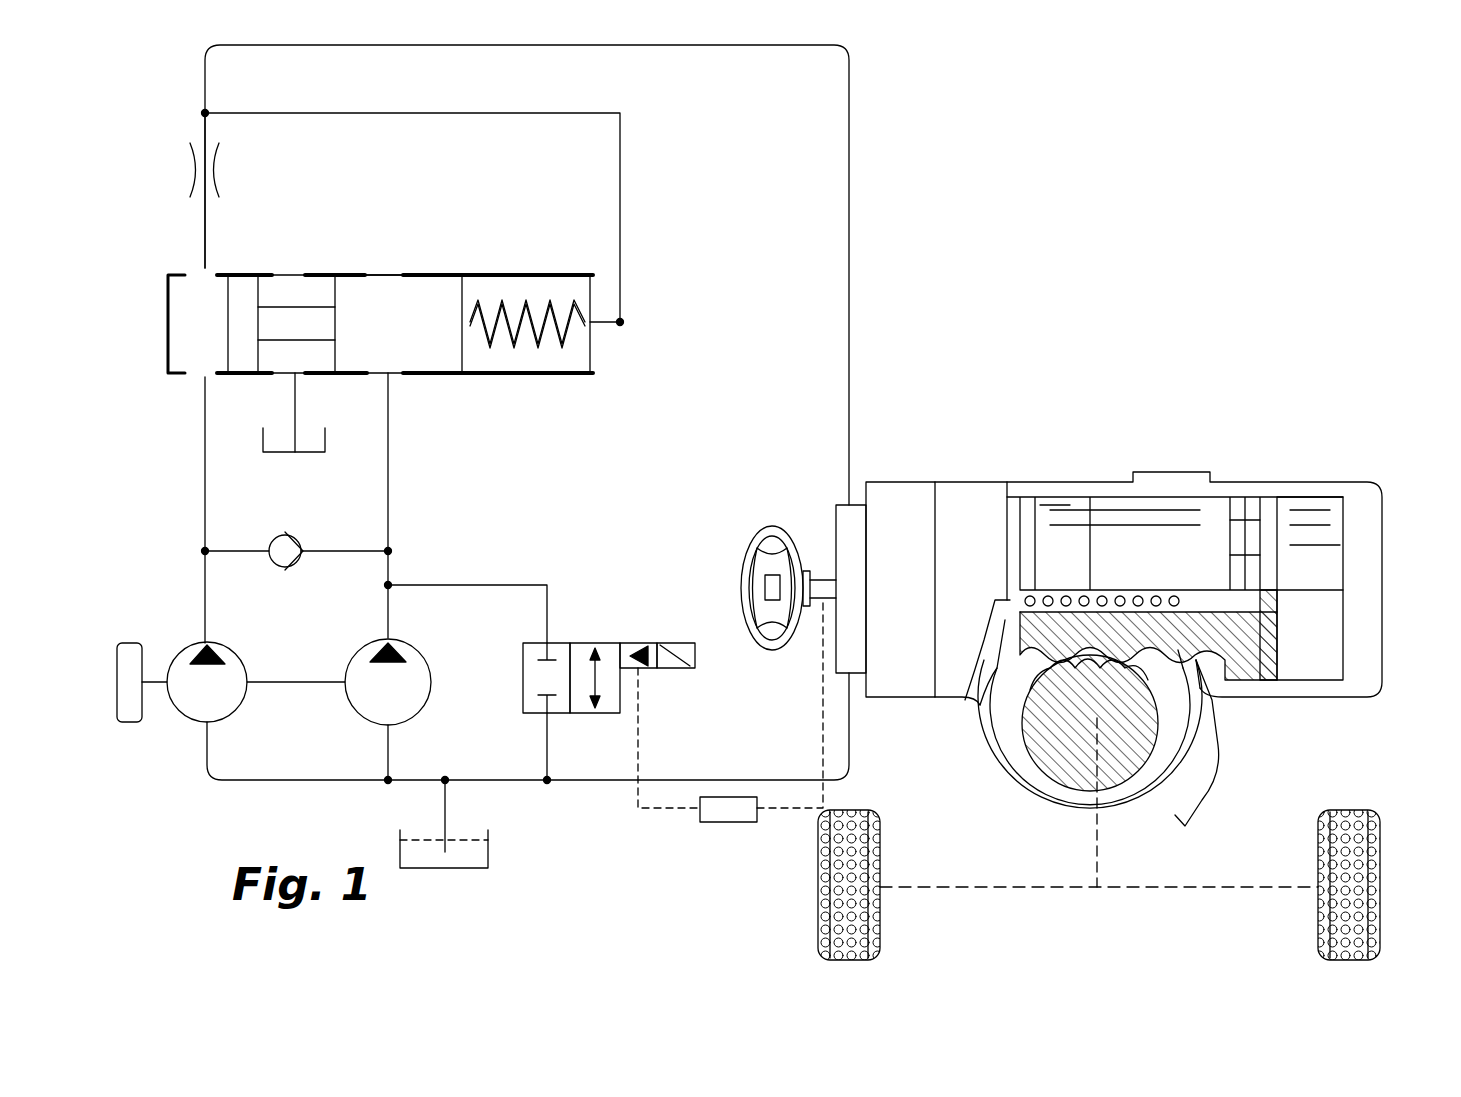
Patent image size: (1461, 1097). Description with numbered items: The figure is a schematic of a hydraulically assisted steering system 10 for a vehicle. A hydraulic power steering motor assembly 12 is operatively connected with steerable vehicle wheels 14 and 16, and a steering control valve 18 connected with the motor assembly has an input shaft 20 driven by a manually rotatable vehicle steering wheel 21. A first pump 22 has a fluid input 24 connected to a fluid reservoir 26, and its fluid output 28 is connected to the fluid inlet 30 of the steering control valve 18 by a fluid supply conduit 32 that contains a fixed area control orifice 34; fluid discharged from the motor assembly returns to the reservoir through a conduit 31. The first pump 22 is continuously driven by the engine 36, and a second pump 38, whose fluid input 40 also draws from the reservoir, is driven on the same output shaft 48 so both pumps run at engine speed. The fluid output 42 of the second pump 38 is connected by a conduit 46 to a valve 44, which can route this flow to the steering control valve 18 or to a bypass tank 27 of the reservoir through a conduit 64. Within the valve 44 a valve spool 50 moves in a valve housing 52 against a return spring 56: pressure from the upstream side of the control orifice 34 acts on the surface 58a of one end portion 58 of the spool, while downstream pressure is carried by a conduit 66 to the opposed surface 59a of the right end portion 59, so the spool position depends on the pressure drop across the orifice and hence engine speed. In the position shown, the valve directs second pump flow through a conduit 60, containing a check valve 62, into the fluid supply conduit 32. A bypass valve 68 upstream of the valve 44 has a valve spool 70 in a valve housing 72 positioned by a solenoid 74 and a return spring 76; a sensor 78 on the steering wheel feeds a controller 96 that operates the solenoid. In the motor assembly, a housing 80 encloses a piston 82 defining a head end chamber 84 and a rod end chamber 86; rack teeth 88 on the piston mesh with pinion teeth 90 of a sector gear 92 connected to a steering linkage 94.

The hydraulically assisted steering system 10 is at (1192, 246).
The hydraulic power steering motor assembly 12 is at (1384, 552).
The steerable vehicle wheel 14 is at (817, 940).
The steerable vehicle wheel 16 is at (1383, 925).
The steering control valve 18 is at (853, 640).
The input shaft 20 is at (822, 578).
The vehicle steering wheel 21 is at (772, 530).
The first pump 22 is at (202, 688).
The fluid input 24 is at (210, 725).
The fluid reservoir 26 is at (426, 862).
The bypass tank 27 is at (328, 440).
The fluid output 28 is at (207, 640).
The fluid inlet 30 is at (853, 502).
The conduit 31 is at (852, 748).
The fluid supply conduit 32 is at (852, 212).
The control orifice 34 is at (222, 168).
The engine 36 is at (131, 704).
The second pump 38 is at (377, 685).
The fluid input 40 is at (391, 727).
The fluid output 42 is at (388, 638).
The valve 44 is at (455, 270).
The conduit 46 is at (390, 453).
The output shaft 48 is at (160, 688).
The valve spool 50 is at (380, 280).
The valve housing 52 is at (266, 272).
The return spring 56 is at (533, 270).
The end portion 58 is at (245, 357).
The surface 58a is at (222, 340).
The right end portion 59 is at (427, 348).
The opposed surface 59a is at (462, 358).
The conduit 60 is at (355, 549).
The check valve 62 is at (277, 535).
The conduit 64 is at (296, 396).
The conduit 66 is at (479, 118).
The bypass valve 68 is at (592, 606).
The valve spool 70 is at (582, 694).
The valve housing 72 is at (560, 642).
The solenoid 74 is at (641, 642).
The return spring 76 is at (683, 641).
The sensor 78 is at (808, 604).
The housing 80 is at (1291, 487).
The piston 82 is at (1118, 540).
The head end chamber 84 is at (1323, 638).
The rod end chamber 86 is at (1000, 660).
The rack teeth 88 is at (1200, 680).
The pinion teeth 90 is at (1218, 736).
The sector gear 92 is at (1068, 752).
The steering linkage 94 is at (1102, 856).
The controller 96 is at (727, 823).